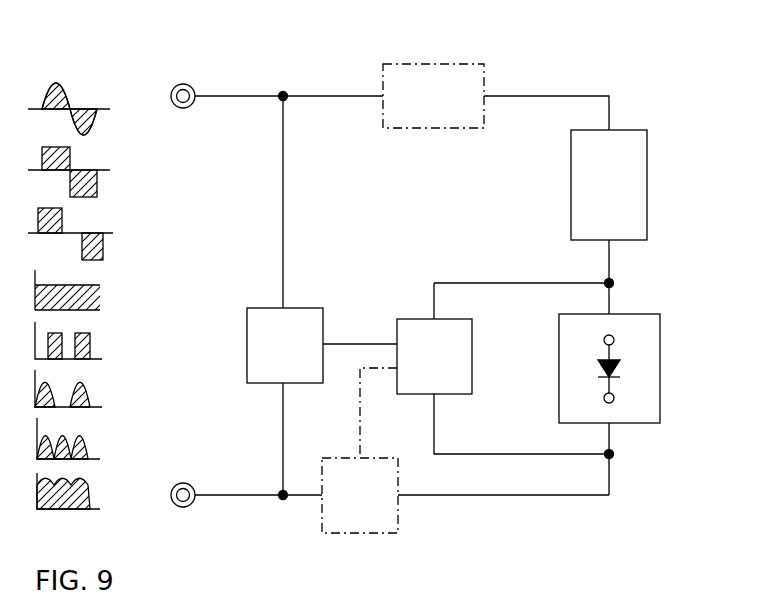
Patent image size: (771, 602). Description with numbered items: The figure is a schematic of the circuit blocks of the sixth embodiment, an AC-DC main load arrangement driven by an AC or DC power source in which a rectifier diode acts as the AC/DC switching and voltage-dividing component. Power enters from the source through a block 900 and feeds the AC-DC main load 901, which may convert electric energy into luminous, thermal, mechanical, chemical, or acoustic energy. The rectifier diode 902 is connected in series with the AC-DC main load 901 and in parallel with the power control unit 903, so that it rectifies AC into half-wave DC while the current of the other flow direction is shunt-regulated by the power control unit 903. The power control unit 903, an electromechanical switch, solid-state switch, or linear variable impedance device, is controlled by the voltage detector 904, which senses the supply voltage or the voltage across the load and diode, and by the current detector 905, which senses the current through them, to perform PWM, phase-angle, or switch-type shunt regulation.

The input filter / EMI filter stage 900 is at (432, 63).
The AC-DC main load 901 is at (650, 193).
The rectifier diode 902 is at (662, 393).
The power control unit 903 is at (434, 356).
The voltage detector 904 is at (285, 345).
The current detector 905 is at (360, 495).